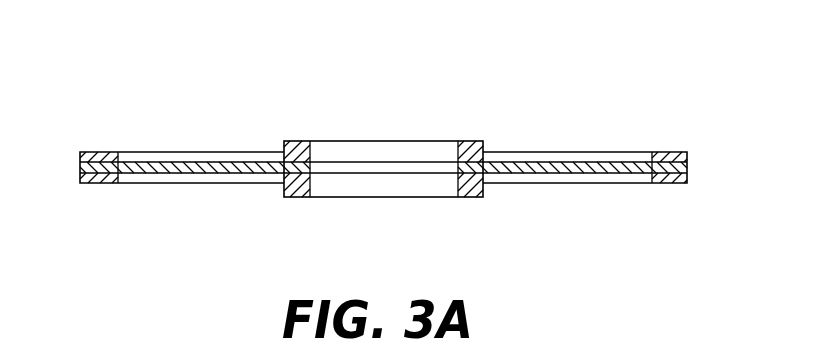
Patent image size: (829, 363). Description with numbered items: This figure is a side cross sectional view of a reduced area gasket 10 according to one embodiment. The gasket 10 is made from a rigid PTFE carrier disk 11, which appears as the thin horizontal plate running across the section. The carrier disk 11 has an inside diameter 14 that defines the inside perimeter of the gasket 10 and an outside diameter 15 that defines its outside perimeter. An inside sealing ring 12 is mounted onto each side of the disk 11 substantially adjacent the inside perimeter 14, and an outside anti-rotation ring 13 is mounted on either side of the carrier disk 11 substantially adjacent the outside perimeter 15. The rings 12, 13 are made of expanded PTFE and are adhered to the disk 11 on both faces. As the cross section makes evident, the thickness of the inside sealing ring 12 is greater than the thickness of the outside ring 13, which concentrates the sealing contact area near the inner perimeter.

The gasket 10 is at (399, 136).
The carrier disk 11 is at (561, 158).
The inside sealing ring 12 is at (471, 186).
The outside anti-rotation ring 13 is at (667, 153).
The inside diameter 14 is at (451, 158).
The outside diameter 15 is at (688, 168).